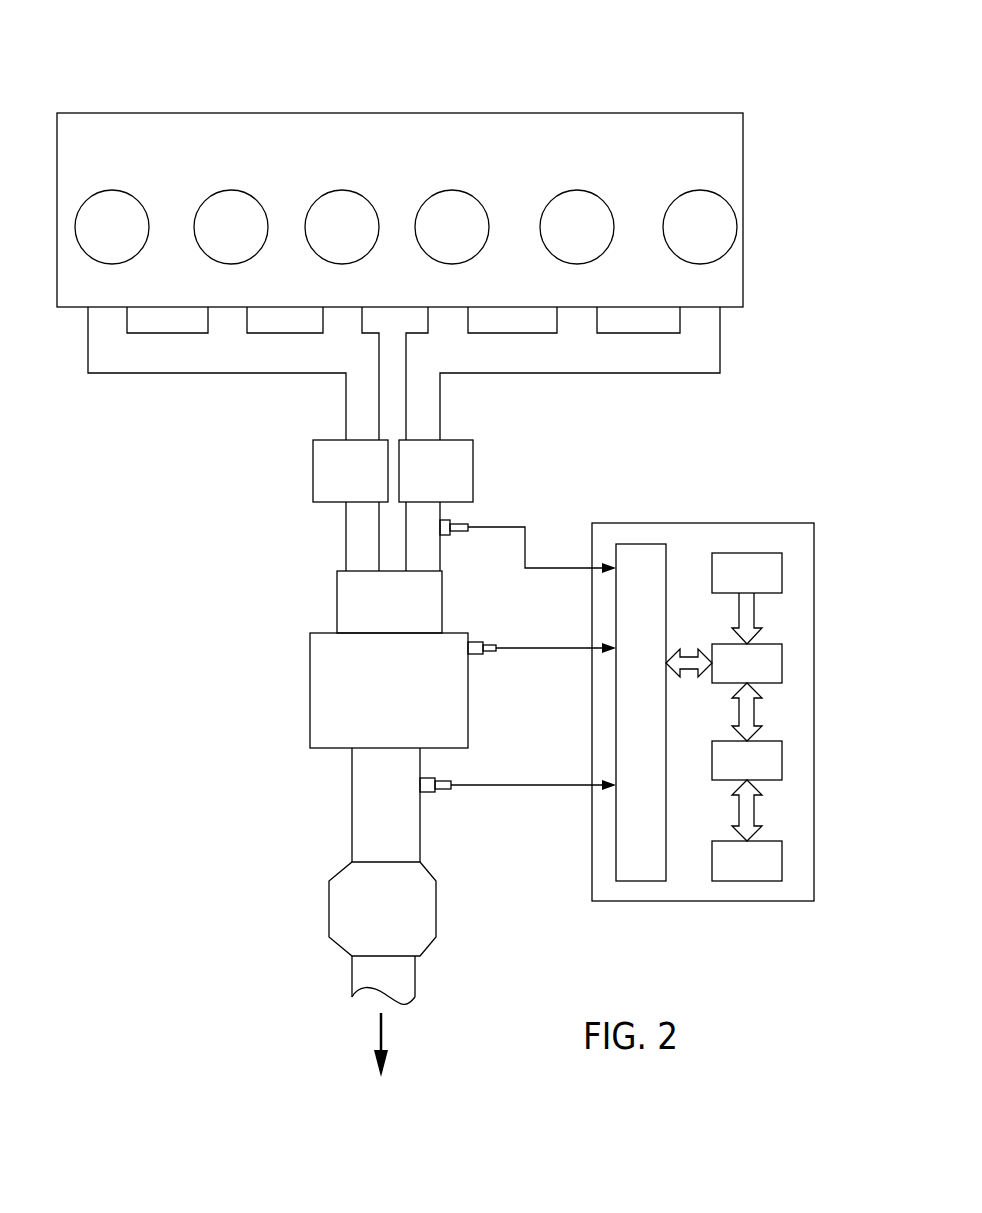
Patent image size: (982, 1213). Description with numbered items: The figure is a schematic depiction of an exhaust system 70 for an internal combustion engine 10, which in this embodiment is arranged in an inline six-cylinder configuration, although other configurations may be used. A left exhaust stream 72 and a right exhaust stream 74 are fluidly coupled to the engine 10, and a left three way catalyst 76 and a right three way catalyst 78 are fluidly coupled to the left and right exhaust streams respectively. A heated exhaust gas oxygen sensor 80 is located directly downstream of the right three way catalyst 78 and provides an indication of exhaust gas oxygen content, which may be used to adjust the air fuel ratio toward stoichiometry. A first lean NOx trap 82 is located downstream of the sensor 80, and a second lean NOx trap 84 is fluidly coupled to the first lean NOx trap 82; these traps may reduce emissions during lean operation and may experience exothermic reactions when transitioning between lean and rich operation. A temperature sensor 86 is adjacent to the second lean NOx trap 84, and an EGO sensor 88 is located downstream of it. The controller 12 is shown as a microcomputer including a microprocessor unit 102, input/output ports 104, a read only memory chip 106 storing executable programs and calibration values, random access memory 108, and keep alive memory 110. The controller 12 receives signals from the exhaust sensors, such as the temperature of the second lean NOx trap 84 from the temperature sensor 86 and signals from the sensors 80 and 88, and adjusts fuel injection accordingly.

The internal combustion engine 10 is at (412, 84).
The controller 12 is at (806, 523).
The exhaust system 70 is at (134, 547).
The left exhaust stream 72 is at (196, 405).
The right exhaust stream 74 is at (634, 408).
The left three way catalyst 76 is at (313, 462).
The right three way catalyst 78 is at (473, 462).
The heated exhaust gas oxygen sensor 80 is at (444, 537).
The first lean NOx trap 82 is at (442, 597).
The second lean NOx trap 84 is at (310, 685).
The temperature sensor 86 is at (476, 656).
The EGO sensor 88 is at (428, 795).
The microprocessor unit 102 is at (782, 658).
The input/output ports 104 is at (666, 552).
The read only memory chip 106 is at (782, 570).
The random access memory 108 is at (782, 758).
The keep alive memory 110 is at (782, 855).